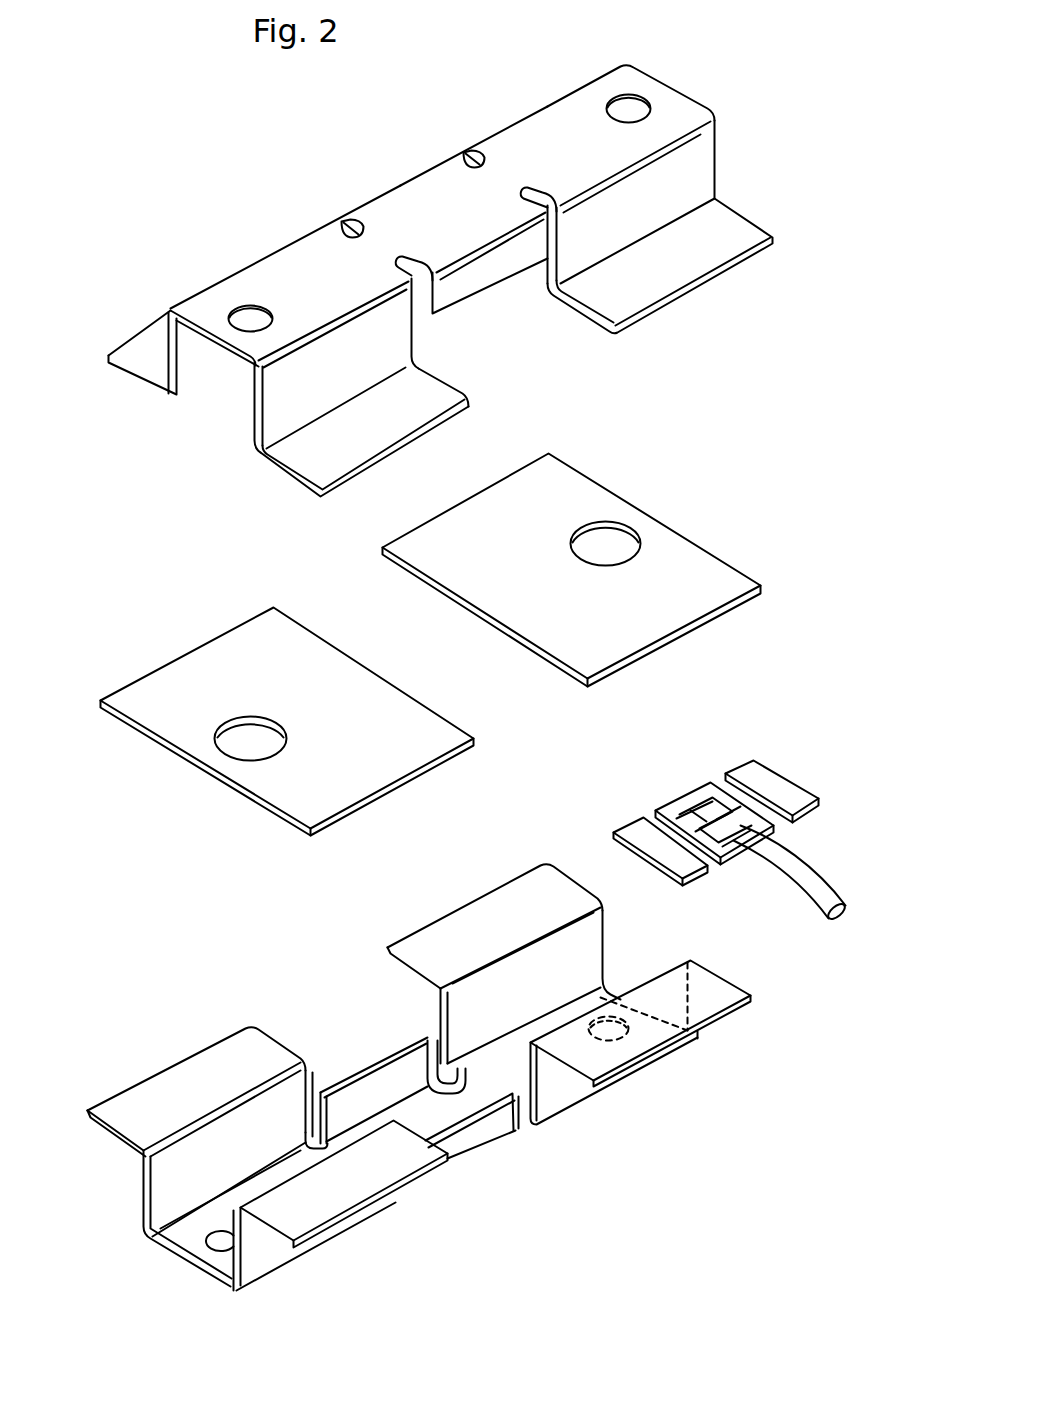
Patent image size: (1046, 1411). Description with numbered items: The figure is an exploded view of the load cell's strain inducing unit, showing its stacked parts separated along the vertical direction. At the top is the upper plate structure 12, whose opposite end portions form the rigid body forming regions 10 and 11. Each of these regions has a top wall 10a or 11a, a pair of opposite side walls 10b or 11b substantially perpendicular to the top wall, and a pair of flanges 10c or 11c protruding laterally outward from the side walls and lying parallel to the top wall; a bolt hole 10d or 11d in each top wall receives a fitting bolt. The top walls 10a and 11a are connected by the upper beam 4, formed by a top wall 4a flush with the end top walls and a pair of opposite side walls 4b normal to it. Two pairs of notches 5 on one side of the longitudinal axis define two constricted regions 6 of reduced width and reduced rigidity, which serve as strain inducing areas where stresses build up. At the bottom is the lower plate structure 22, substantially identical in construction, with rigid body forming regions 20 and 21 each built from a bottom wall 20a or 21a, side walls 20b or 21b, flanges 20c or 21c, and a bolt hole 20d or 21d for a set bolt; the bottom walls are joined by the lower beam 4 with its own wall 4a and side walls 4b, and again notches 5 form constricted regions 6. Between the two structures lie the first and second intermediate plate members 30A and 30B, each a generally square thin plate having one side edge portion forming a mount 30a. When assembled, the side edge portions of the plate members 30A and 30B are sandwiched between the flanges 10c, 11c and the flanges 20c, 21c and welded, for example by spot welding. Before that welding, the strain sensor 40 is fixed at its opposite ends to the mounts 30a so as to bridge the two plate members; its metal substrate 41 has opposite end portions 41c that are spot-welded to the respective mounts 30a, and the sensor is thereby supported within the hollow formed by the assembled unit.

The beam 4 is at (385, 198).
The top wall of beam 4a is at (428, 212).
The side walls of beam 4b is at (458, 272).
The notches 5 is at (350, 212).
The constricted regions 6 is at (360, 247).
The rigid body forming region 10 is at (668, 108).
The top wall 10a is at (627, 85).
The side walls 10b is at (688, 177).
The flanges 10c is at (707, 247).
The bolt hole 10d is at (633, 112).
The rigid body forming region 11 is at (207, 305).
The top wall 11a is at (297, 288).
The side walls 11b is at (283, 383).
The flanges 11c is at (155, 352).
The bolt hole 11d is at (243, 318).
The upper plate structure 12 is at (280, 146).
The rigid body forming region 20 is at (647, 1063).
The bottom wall 20a is at (597, 997).
The side walls 20b is at (573, 957).
The flanges 20c is at (497, 917).
The bolt hole 20d is at (625, 1018).
The rigid body forming region 21 is at (287, 1253).
The bottom wall 21a is at (218, 1280).
The side walls 21b is at (253, 1250).
The flanges 21c is at (188, 1085).
The bolt hole 21d is at (223, 1240).
The lower plate structure 22 is at (310, 975).
The first intermediate plate member 30A is at (570, 513).
The second intermediate plate member 30B is at (195, 695).
The mount 30a is at (505, 602).
The strain sensor 40 is at (785, 755).
The substrate 41 is at (787, 802).
The end portions of substrate 41c is at (780, 783).